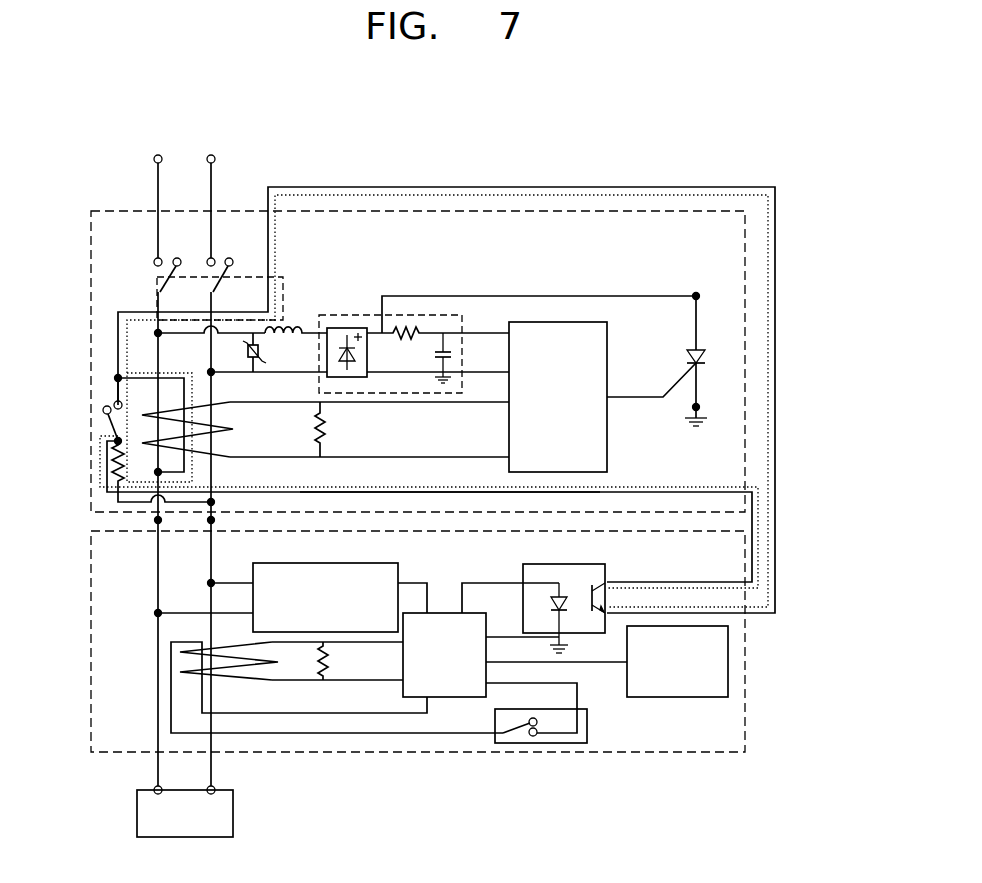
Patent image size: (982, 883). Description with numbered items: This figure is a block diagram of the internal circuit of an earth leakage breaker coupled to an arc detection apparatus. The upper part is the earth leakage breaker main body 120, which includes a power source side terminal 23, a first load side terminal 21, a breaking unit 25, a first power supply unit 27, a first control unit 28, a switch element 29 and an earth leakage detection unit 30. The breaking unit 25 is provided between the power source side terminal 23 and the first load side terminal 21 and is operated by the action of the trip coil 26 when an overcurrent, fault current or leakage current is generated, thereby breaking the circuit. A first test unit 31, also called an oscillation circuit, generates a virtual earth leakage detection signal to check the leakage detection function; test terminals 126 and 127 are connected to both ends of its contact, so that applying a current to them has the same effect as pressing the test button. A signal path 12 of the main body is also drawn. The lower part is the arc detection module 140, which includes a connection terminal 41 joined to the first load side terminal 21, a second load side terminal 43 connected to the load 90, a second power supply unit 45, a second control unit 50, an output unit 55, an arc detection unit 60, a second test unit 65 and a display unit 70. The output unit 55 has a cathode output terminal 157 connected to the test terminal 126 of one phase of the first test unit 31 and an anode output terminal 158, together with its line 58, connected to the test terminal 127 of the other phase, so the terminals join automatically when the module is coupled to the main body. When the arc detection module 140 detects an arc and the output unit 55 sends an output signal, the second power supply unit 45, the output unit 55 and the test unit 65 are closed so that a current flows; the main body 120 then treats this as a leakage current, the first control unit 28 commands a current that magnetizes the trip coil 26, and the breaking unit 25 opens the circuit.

The first signal line 12 is at (768, 388).
The first load side terminal 21 is at (156, 466).
The power source side terminal 23 is at (157, 185).
The breaking unit 25 is at (162, 284).
The trip coil 26 is at (294, 325).
The first power supply unit 27 is at (341, 315).
The first control unit 28 is at (557, 322).
The switch element 29 is at (700, 349).
The earth leakage detection unit 30 is at (198, 450).
The first test unit 31 is at (114, 428).
The connection terminal 41 is at (157, 538).
The second load side terminal 43 is at (157, 771).
The second power supply unit 45 is at (285, 563).
The second control unit 50 is at (445, 697).
The output unit 55 is at (523, 578).
The signal line 58 is at (415, 494).
The arc detection unit 60 is at (227, 678).
The second test unit 65 is at (540, 744).
The display unit 70 is at (728, 662).
The load 90 is at (233, 813).
The earth leakage breaker main body 120 is at (91, 336).
The test terminal 126 is at (156, 334).
The test terminal 127 is at (100, 448).
The arc detection module 140 is at (91, 607).
The cathode output terminal 157 is at (775, 330).
The anode output terminal 158 is at (752, 535).